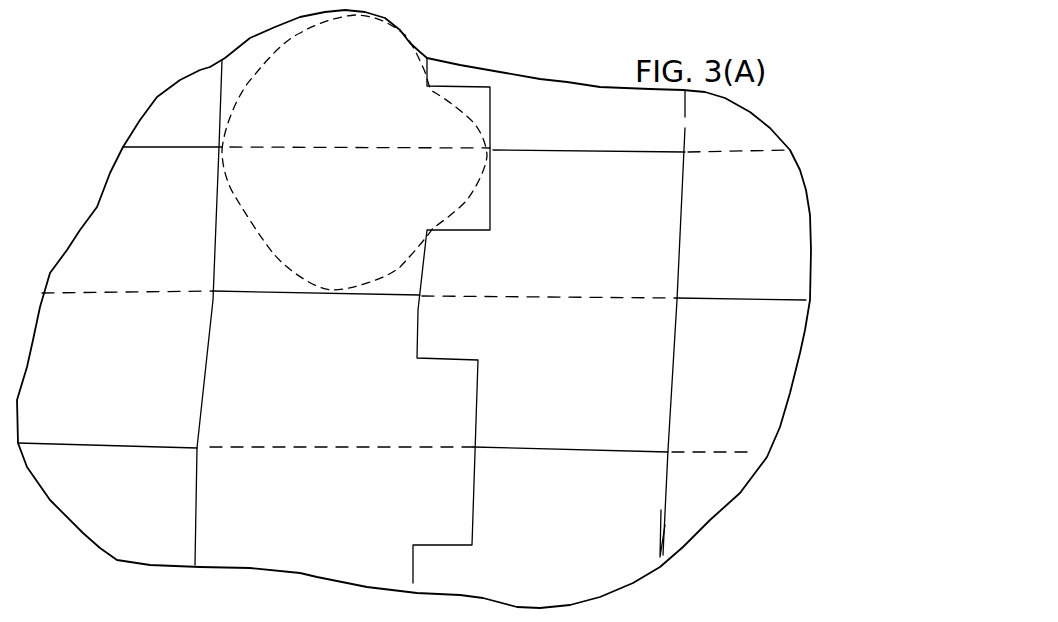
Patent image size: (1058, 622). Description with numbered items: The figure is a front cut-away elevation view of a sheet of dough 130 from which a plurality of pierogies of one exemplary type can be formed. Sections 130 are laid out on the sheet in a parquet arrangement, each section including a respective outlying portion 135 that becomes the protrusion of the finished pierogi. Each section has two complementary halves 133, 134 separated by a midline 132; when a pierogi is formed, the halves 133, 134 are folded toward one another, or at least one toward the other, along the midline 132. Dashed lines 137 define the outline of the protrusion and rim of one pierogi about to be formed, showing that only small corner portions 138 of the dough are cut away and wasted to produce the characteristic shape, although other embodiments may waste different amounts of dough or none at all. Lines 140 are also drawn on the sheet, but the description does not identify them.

The sheet of dough / section 130 is at (414, 309).
The midline 132 is at (356, 174).
The complementary half 133 is at (254, 172).
The complementary half 134 is at (248, 123).
The outlying portion 135 is at (450, 268).
The dashed lines 137 is at (354, 152).
The corner portions 138 is at (517, 103).
The boundary lines 140 is at (456, 86).